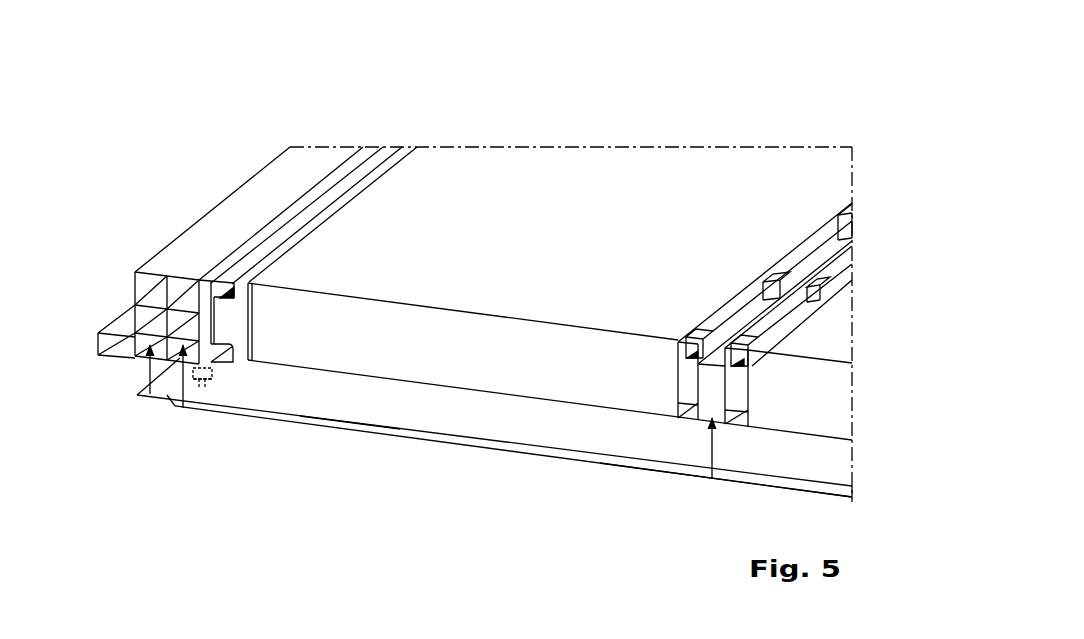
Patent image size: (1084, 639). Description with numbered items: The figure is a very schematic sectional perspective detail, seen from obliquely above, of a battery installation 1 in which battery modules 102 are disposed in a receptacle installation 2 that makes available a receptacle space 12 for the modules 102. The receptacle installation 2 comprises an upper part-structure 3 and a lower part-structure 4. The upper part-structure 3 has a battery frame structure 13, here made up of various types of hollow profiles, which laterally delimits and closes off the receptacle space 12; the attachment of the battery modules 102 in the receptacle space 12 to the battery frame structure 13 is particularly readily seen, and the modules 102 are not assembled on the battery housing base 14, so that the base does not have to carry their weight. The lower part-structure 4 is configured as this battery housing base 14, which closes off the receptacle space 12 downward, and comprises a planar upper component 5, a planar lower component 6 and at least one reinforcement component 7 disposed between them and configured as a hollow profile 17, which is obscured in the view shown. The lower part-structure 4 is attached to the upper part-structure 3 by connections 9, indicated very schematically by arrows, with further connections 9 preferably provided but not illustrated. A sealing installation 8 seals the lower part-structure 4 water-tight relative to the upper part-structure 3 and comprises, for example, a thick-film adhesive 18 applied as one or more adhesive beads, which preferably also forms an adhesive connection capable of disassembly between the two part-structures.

The battery installation 1 is at (310, 90).
The receptacle installation 2 is at (735, 109).
The upper part-structure 3 is at (178, 215).
The lower part-structure 4 is at (573, 487).
The upper component 5 is at (296, 395).
The lower component 6 is at (322, 432).
The reinforcement component 7 is at (443, 450).
The sealing installation 8 is at (220, 374).
The connections 9 is at (148, 366).
The receptacle space 12 is at (495, 138).
The battery frame structure 13 is at (228, 218).
The battery housing base 14 is at (630, 472).
The hollow profile 17 is at (463, 460).
The thick-film adhesive 18 is at (205, 387).
The battery modules 102 is at (617, 175).